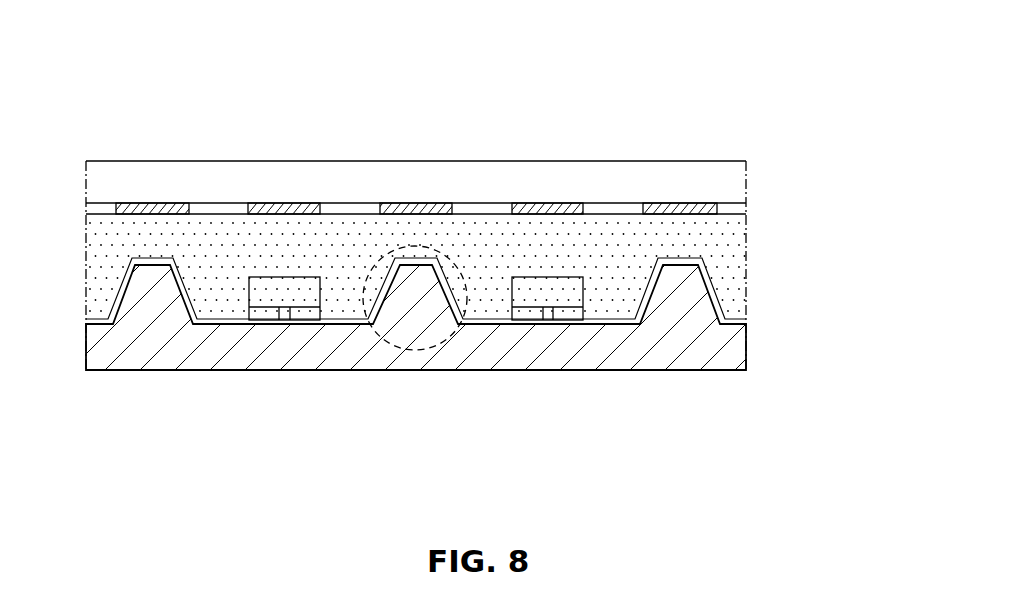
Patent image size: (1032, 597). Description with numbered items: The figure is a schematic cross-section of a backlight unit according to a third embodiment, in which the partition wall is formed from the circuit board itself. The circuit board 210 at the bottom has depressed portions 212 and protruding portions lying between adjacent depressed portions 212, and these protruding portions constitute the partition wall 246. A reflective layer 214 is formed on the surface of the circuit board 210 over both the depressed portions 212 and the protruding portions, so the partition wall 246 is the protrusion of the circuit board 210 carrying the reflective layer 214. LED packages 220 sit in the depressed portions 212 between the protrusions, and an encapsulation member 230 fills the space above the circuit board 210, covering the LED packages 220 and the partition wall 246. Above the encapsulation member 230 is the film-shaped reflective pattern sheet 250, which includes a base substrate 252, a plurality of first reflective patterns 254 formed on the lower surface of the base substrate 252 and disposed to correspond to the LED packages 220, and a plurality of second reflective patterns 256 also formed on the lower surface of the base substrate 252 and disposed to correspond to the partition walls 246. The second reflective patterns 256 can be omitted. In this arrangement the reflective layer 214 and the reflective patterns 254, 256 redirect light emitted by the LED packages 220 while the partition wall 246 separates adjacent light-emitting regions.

The circuit board 210 is at (728, 352).
The depressed portions 212 is at (490, 325).
The reflective layer 214 is at (746, 321).
The LED packages 220 is at (567, 292).
The encapsulation member 230 is at (727, 260).
The partition wall 246 is at (413, 348).
The reflective pattern sheet 250 is at (416, 194).
The base substrate 252 is at (222, 183).
The first reflective patterns 254 is at (285, 202).
The second reflective patterns 256 is at (410, 205).